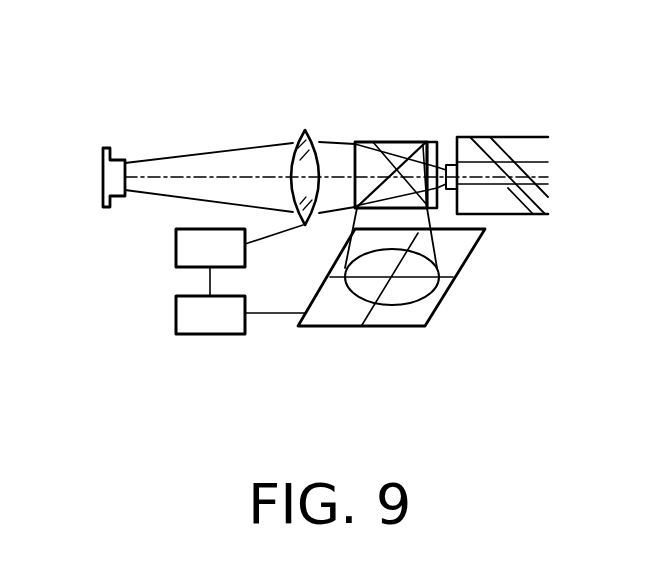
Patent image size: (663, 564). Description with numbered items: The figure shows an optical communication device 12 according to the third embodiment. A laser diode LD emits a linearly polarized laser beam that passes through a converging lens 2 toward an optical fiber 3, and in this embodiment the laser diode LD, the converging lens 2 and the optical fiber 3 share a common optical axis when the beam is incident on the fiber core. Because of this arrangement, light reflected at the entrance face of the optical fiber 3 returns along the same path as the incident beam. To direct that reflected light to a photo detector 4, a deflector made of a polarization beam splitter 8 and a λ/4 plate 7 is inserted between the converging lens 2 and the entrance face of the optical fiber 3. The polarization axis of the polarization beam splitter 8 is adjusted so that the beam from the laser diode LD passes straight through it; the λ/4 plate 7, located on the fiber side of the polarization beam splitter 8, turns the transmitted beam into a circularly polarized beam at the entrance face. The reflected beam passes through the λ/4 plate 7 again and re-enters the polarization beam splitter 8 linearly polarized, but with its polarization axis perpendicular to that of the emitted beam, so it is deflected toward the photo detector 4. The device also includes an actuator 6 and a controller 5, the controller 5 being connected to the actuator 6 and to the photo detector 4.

The optical communication device 12 is at (199, 86).
The laser diode LD is at (103, 178).
The converging lens 2 is at (300, 150).
The polarization beam splitter 8 is at (385, 142).
The λ/4 plate 7 is at (433, 142).
The optical fiber 3 is at (525, 147).
The photo detector 4 is at (470, 262).
The actuator 6 is at (176, 244).
The controller 5 is at (176, 314).